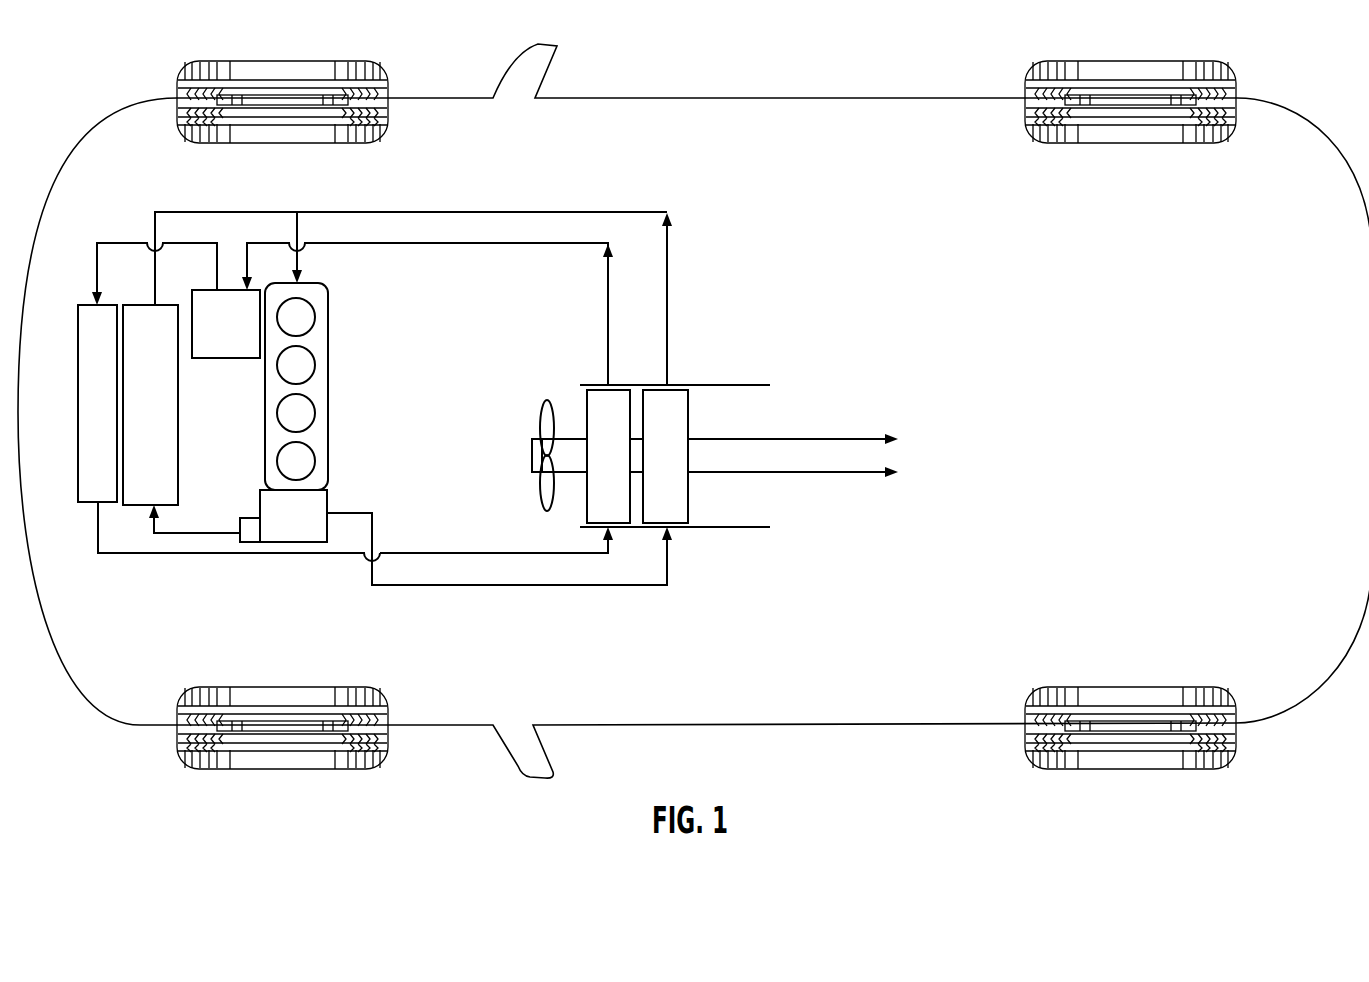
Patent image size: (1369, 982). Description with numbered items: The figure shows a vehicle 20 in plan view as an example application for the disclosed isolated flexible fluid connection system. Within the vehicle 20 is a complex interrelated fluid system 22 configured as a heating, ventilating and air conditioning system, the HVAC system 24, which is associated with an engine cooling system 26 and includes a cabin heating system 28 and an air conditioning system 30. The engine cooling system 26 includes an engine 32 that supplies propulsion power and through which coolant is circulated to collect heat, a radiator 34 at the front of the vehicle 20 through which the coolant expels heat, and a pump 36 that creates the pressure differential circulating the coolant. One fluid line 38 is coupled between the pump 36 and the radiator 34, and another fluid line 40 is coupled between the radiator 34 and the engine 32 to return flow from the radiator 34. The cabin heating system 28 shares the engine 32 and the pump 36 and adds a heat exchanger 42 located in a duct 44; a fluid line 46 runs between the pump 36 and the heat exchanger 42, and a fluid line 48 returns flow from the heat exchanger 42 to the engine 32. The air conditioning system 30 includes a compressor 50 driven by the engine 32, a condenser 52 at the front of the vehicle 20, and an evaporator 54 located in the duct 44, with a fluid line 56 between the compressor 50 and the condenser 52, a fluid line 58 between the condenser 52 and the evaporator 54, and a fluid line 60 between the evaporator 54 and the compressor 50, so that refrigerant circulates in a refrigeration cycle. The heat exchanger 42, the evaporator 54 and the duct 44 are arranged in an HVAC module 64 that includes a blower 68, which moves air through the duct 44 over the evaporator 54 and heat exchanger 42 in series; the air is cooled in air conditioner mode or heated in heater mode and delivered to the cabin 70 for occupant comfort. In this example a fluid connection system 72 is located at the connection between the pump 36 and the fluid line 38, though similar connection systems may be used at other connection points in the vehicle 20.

The vehicle 20 is at (823, 98).
The complex interrelated fluid system 22 is at (764, 572).
The HVAC system 24 is at (665, 396).
The engine cooling system 26 is at (272, 207).
The cabin heating system 28 is at (637, 594).
The air conditioning system 30 is at (435, 546).
The engine 32 is at (346, 352).
The radiator 34 is at (180, 486).
The pump 36 is at (306, 543).
The fluid line 38 is at (210, 554).
The fluid line 40 is at (200, 212).
The heat exchanger 42 is at (688, 513).
The duct 44 is at (710, 385).
The fluid line 46 is at (493, 586).
The fluid line 48 is at (666, 252).
The compressor 50 is at (227, 360).
The condenser 52 is at (78, 470).
The evaporator 54 is at (587, 512).
The fluid line 56 is at (112, 243).
The fluid line 58 is at (162, 535).
The fluid line 60 is at (455, 244).
The HVAC module 64 is at (689, 415).
The blower 68 is at (546, 398).
The cabin 70 is at (1052, 453).
The fluid connection system 72 is at (240, 543).